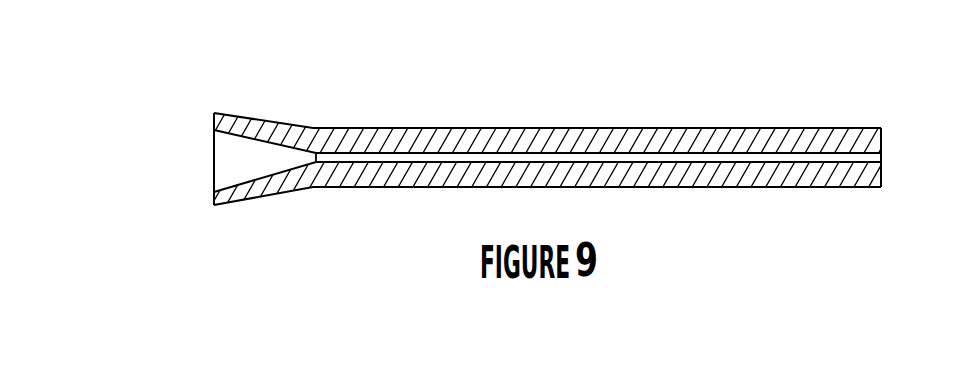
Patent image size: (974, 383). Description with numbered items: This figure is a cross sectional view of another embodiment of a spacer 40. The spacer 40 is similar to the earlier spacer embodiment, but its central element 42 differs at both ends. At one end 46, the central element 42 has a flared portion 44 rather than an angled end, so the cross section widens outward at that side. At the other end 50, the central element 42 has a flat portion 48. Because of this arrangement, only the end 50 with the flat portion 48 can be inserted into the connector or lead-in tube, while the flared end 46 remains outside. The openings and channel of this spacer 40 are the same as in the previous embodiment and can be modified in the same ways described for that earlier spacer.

The spacer 40 is at (460, 108).
The central element 42 is at (630, 128).
The flared portion 44 is at (238, 200).
The end 46 is at (214, 112).
The flat portion 48 is at (882, 132).
The end 50 is at (882, 187).